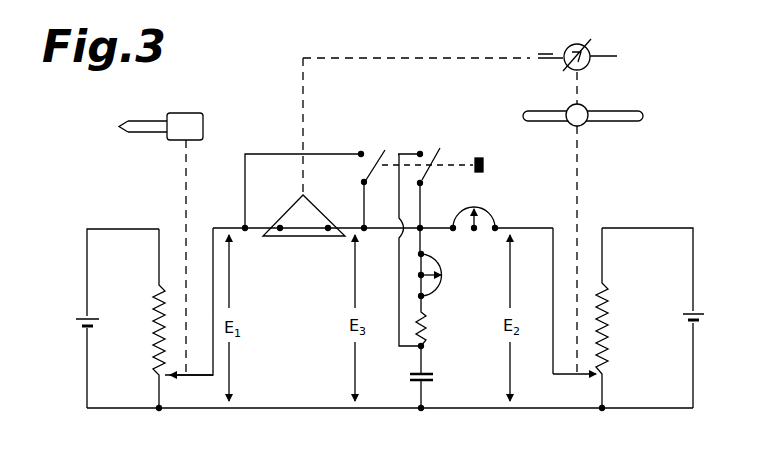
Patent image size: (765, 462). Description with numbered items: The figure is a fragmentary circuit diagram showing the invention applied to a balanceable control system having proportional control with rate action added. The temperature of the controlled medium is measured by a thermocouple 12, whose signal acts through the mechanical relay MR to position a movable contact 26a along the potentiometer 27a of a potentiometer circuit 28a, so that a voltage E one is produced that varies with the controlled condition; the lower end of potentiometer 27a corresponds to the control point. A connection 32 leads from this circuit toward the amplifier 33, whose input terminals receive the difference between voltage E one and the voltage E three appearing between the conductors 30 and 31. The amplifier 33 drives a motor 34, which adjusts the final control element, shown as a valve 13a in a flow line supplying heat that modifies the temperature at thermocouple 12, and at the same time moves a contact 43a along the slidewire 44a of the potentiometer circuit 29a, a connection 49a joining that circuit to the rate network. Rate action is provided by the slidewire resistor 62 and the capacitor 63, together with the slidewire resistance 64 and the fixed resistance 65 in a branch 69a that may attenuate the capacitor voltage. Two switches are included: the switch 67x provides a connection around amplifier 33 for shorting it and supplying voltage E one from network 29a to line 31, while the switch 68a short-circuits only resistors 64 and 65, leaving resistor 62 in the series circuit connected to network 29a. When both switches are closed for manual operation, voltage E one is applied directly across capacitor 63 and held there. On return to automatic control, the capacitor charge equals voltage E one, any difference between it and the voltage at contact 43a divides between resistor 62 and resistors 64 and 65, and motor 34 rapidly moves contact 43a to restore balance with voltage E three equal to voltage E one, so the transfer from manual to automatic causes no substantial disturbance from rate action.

The thermocouple 12 is at (128, 122).
The valve 13a is at (584, 107).
The movable contact 26a is at (175, 378).
The potentiometer 27a is at (150, 338).
The potentiometer circuit 28a is at (145, 283).
The potentiometer circuit 29a is at (667, 283).
The conductor 30 is at (350, 410).
The line 31 is at (382, 234).
The amplifier input line 32 is at (223, 226).
The amplifier 33 is at (330, 211).
The motor 34 is at (590, 50).
The movable contact 43a is at (573, 377).
The slidewire 44a is at (610, 345).
The connecting line 49a is at (553, 300).
The slidewire resistor 62 is at (487, 212).
The capacitor 63 is at (434, 375).
The slidewire resistance 64 is at (441, 283).
The fixed resistance 65 is at (428, 327).
The switch 67x is at (378, 150).
The switch 68a is at (438, 148).
The connecting line 69a is at (398, 328).